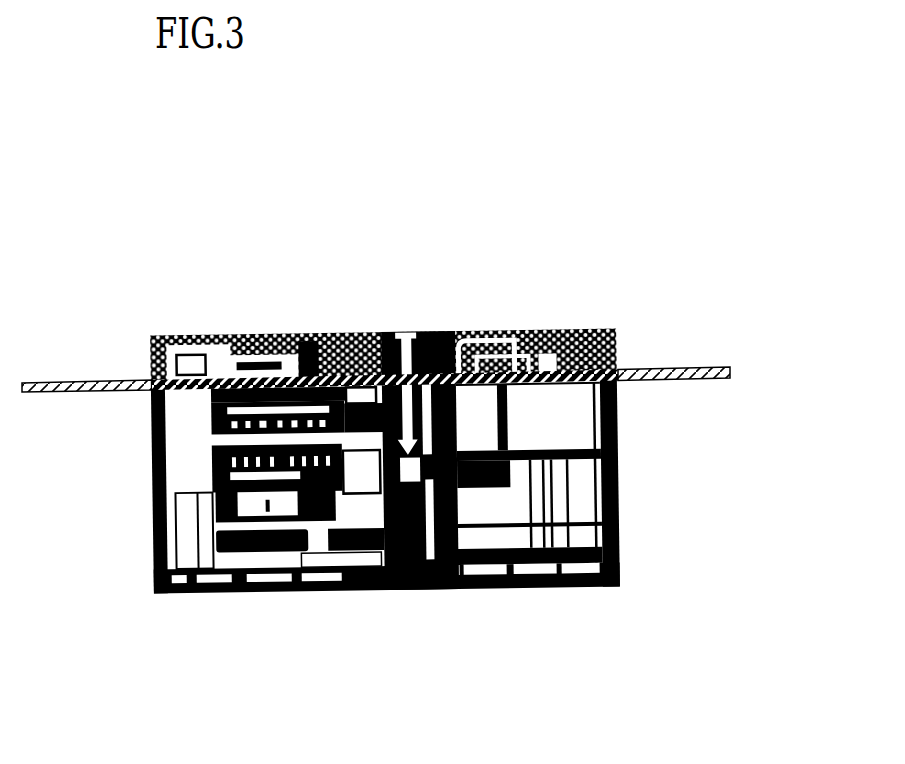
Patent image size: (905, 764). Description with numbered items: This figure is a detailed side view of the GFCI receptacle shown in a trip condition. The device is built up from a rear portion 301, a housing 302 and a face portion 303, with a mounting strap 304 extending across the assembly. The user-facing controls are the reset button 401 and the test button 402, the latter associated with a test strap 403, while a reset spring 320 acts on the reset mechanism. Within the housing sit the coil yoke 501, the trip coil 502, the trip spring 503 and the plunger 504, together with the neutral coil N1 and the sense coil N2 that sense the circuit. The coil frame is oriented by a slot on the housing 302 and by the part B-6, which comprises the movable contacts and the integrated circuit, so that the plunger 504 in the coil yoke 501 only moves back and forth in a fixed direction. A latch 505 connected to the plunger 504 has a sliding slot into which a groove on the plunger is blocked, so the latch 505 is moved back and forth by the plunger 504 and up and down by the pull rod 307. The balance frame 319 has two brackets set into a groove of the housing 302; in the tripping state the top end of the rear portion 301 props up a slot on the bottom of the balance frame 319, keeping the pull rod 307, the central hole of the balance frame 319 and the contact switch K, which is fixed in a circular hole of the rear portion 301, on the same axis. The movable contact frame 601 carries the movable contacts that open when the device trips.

The rear portion 301 is at (449, 541).
The housing 302 is at (668, 481).
The face portion 303 is at (443, 316).
The mounting strap 304 is at (376, 322).
The pull rod 307 is at (528, 342).
The balance frame 319 is at (381, 621).
The reset spring 320 is at (514, 332).
The reset button 401 is at (433, 332).
The test button 402 is at (484, 400).
The test strap 403 is at (291, 316).
The coil yoke 501 is at (211, 419).
The trip coil 502 is at (209, 469).
The trip spring 503 is at (211, 540).
The plunger 504 is at (187, 501).
The latch 505 is at (304, 615).
The movable contact frame 601 is at (136, 605).
The part B-6 is at (126, 489).
The neutral coil N1 is at (167, 625).
The sense coil N2 is at (246, 625).
The contact switch K is at (454, 621).